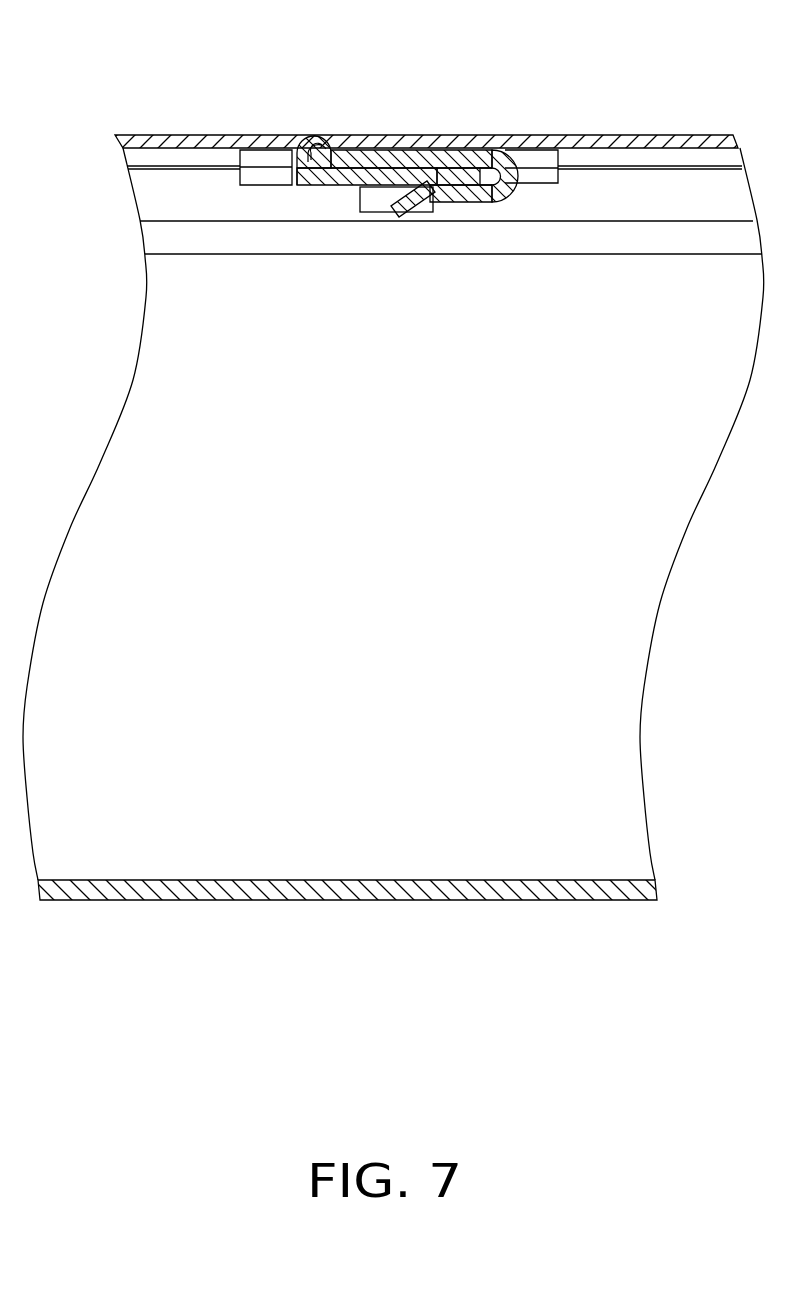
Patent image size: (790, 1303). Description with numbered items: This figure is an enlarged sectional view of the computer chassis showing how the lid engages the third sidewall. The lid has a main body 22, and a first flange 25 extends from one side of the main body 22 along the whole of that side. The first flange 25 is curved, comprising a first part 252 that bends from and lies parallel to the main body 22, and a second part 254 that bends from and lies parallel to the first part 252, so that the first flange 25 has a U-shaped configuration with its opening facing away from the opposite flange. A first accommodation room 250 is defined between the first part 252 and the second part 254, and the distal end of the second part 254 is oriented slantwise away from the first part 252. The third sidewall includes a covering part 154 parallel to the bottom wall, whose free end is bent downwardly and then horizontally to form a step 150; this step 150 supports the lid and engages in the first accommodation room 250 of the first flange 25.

The main body 22 is at (575, 146).
The covering part 154 is at (192, 147).
The step 150 is at (323, 160).
The first flange 25 is at (401, 110).
The first accommodation room 250 is at (377, 162).
The first part 252 is at (418, 158).
The second part 254 is at (470, 195).